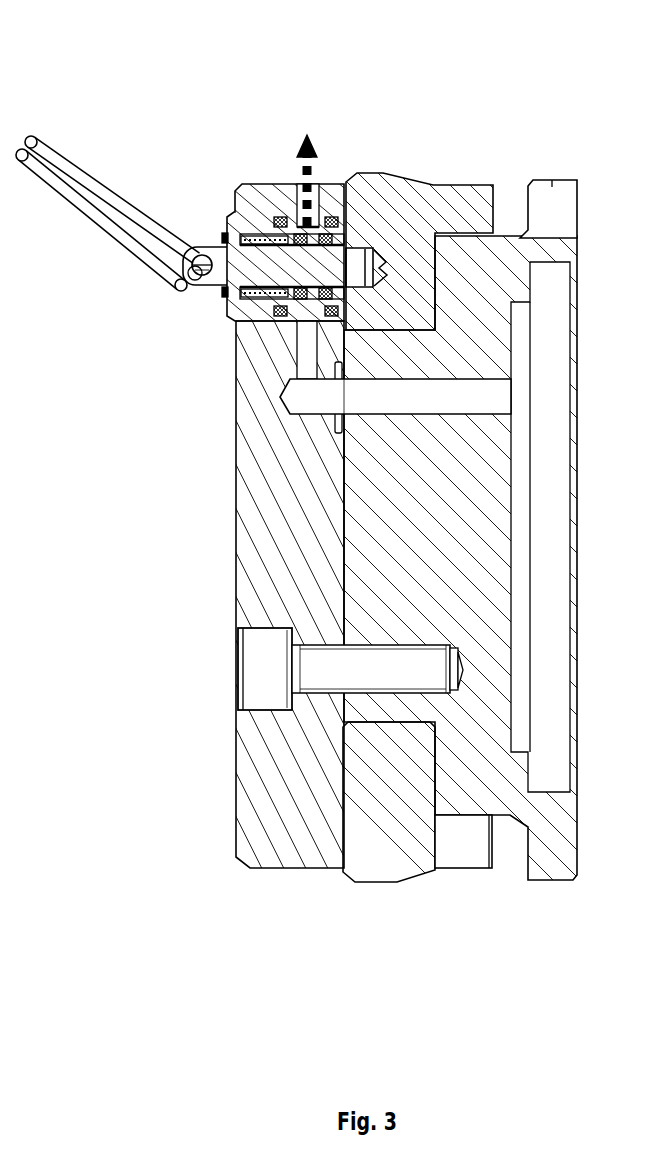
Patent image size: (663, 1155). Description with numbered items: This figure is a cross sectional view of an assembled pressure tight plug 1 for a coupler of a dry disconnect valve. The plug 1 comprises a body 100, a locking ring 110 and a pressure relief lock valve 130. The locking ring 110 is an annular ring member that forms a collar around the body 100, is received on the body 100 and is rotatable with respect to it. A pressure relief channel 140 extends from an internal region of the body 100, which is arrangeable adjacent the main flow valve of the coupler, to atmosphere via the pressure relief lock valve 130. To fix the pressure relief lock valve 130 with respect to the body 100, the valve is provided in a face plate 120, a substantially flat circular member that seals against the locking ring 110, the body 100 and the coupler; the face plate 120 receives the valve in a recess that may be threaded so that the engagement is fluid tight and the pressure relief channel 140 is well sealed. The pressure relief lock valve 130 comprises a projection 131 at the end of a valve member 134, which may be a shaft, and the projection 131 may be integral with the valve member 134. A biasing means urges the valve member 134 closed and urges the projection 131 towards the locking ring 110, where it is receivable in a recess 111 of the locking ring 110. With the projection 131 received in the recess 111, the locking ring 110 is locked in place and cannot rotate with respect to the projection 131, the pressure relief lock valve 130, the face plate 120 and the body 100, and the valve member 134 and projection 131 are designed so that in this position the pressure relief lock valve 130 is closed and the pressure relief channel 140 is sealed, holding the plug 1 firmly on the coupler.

The plug 1 is at (107, 94).
The body 100 is at (438, 509).
The locking ring 110 is at (431, 221).
The recess 111 is at (383, 288).
The face plate 120 is at (308, 822).
The pressure relief lock valve 130 is at (228, 313).
The projection 131 is at (362, 277).
The valve member 134 is at (283, 277).
The pressure relief channel 140 is at (439, 409).